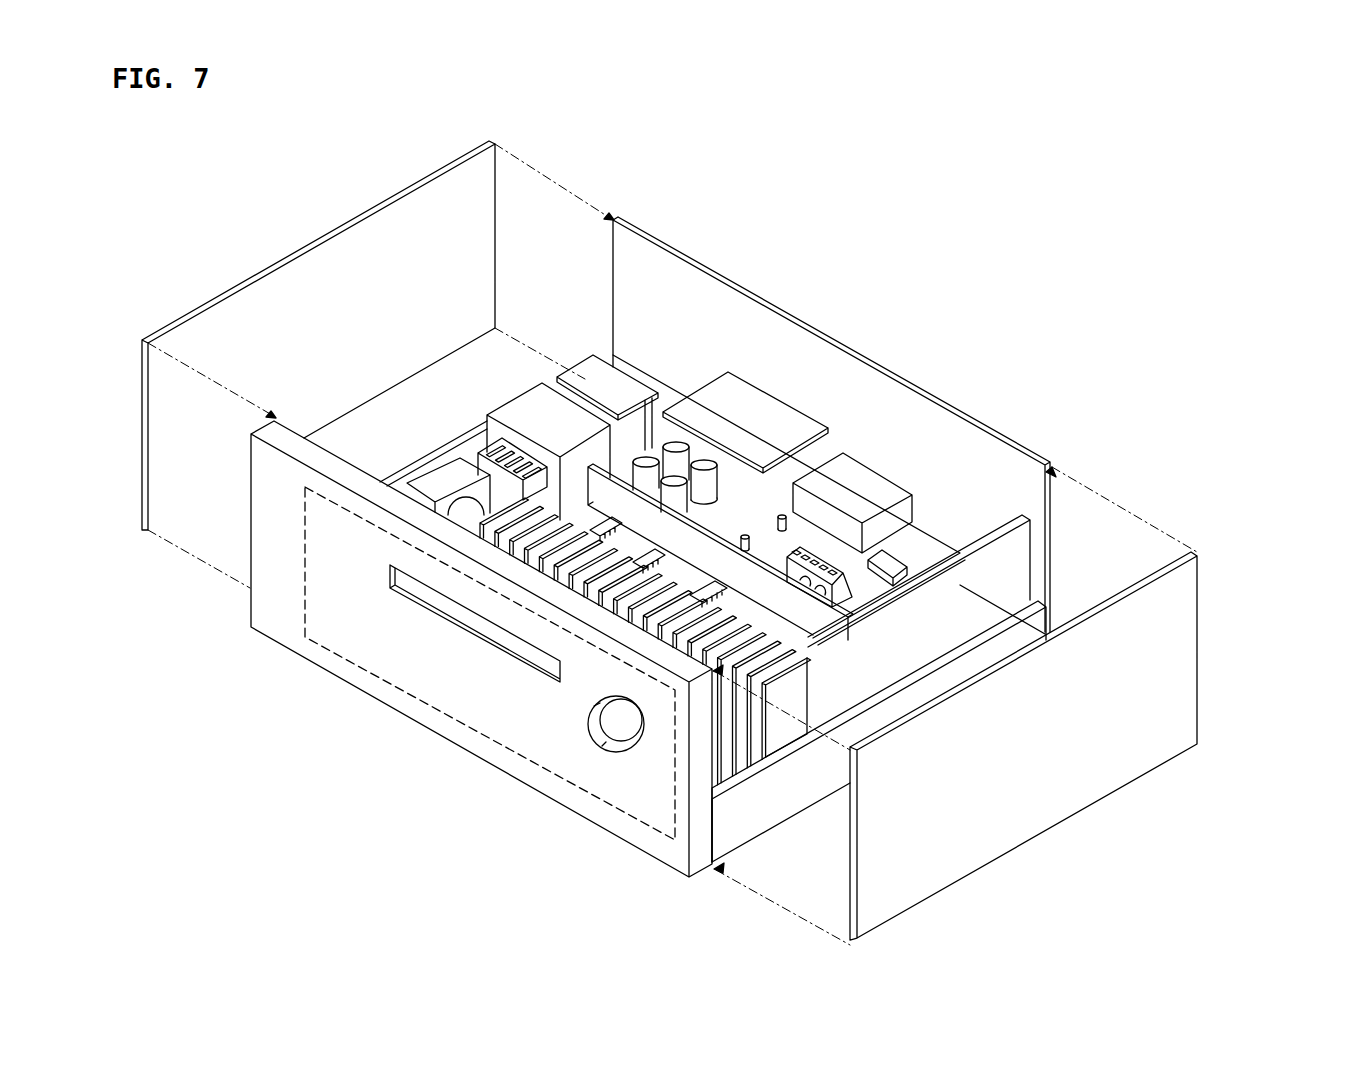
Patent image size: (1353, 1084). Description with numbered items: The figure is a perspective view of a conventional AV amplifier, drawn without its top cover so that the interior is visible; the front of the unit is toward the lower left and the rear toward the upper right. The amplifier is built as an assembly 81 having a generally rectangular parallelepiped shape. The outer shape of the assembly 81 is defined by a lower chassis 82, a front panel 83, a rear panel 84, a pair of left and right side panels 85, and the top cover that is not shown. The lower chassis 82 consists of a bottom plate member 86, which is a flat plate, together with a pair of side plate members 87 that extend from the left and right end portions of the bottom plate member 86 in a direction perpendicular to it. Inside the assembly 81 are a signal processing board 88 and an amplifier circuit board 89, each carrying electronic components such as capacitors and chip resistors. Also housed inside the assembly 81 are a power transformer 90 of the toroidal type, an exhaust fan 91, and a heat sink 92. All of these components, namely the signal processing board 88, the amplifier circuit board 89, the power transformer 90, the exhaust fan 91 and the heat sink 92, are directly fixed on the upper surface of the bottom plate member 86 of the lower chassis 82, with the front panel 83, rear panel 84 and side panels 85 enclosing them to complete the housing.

The assembly 81 is at (735, 262).
The lower chassis 82 is at (750, 837).
The front panel 83 is at (472, 738).
The rear panel 84 is at (847, 343).
The side panels 85 is at (345, 228).
The bottom plate member 86 is at (657, 443).
The side plate members 87 is at (462, 443).
The signal processing board 88 is at (1008, 568).
The amplifier circuit board 89 is at (913, 562).
The power transformer 90 is at (525, 393).
The exhaust fan 91 is at (440, 487).
The heat sink 92 is at (790, 693).